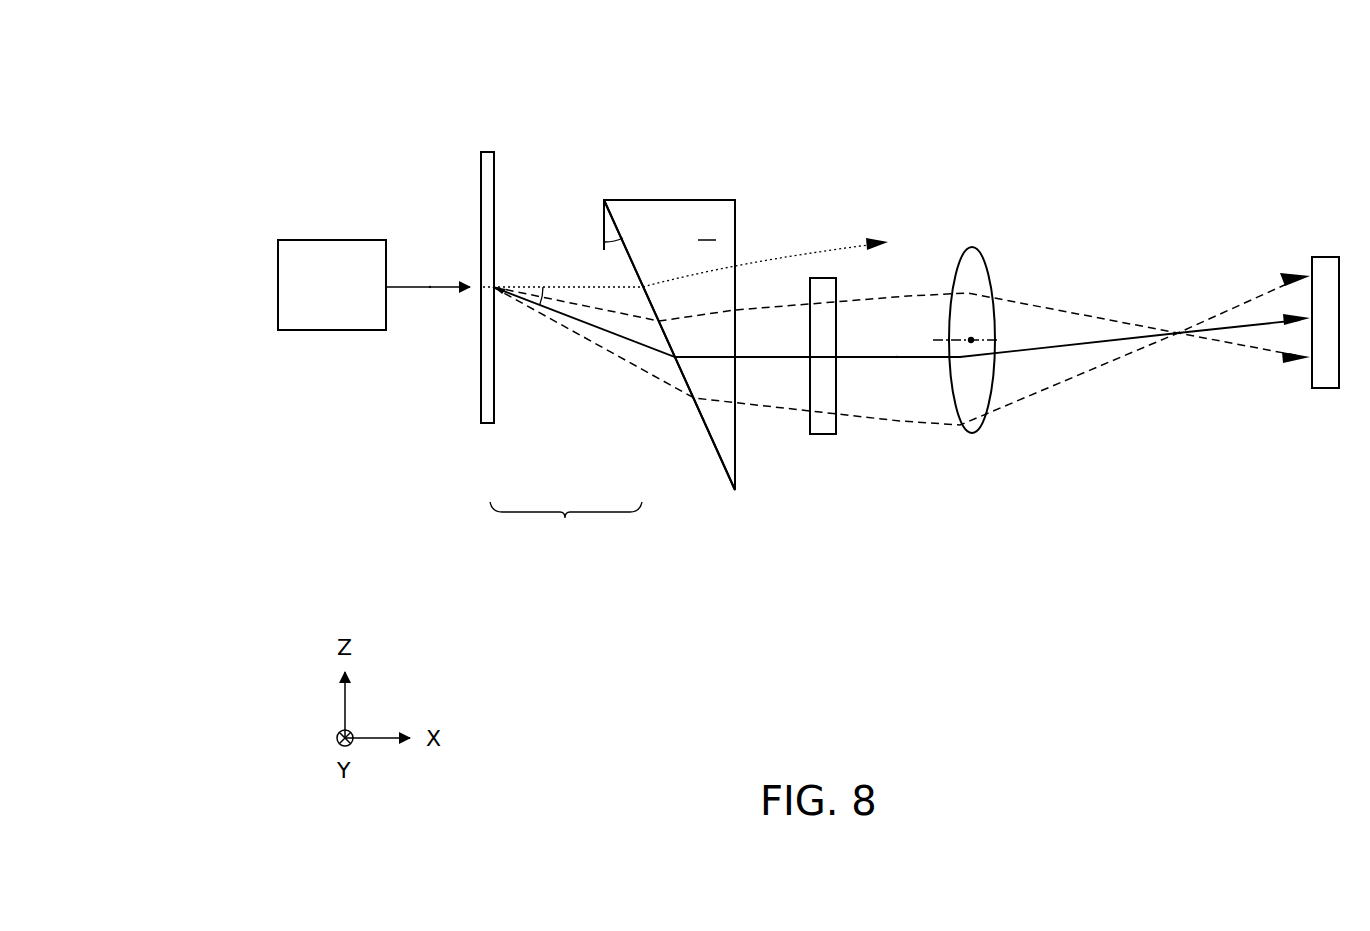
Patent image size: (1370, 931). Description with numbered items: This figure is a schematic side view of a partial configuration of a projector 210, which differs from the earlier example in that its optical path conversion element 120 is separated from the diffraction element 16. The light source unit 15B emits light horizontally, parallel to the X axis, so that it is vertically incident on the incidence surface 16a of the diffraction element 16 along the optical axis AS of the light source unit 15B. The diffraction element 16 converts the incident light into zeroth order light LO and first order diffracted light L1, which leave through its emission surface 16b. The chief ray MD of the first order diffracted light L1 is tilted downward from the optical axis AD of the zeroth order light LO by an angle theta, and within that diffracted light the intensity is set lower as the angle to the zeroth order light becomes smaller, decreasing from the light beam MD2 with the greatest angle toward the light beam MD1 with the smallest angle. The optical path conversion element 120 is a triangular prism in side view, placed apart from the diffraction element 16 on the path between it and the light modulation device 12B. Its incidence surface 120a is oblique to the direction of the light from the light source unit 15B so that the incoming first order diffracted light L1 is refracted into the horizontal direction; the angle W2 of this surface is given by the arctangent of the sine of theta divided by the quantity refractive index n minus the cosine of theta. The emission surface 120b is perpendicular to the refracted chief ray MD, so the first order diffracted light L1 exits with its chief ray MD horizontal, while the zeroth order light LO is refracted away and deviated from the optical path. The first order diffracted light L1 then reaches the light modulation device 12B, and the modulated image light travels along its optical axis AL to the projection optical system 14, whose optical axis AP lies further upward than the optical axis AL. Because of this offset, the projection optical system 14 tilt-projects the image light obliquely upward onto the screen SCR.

The projector 210 is at (620, 78).
The light source unit 15B is at (320, 331).
The optical axis of the light source unit AS is at (410, 284).
The diffraction element 16 is at (488, 160).
The incidence surface 16a is at (480, 398).
The emission surface 16b is at (496, 178).
The optical axis of the 0-th order light AD is at (583, 285).
The light beam MD1 is at (557, 298).
The chief ray of the first order diffracted light MD is at (595, 328).
The light beam MD2 is at (626, 358).
The first order diffracted light L1 is at (566, 523).
The optical path conversion element 120 is at (708, 208).
The incidence surface 120a is at (712, 441).
The emission surface 120b is at (735, 227).
The refractive index n is at (707, 227).
The angle of the incidence surface W2 is at (623, 245).
The 0-th order light LO is at (860, 240).
The light modulation device 12B is at (823, 428).
The optical axis of the incident image light AL is at (897, 358).
The projection optical system 14 is at (975, 270).
The optical axis of the projection optical system AP is at (1002, 338).
The screen SCR is at (1322, 262).